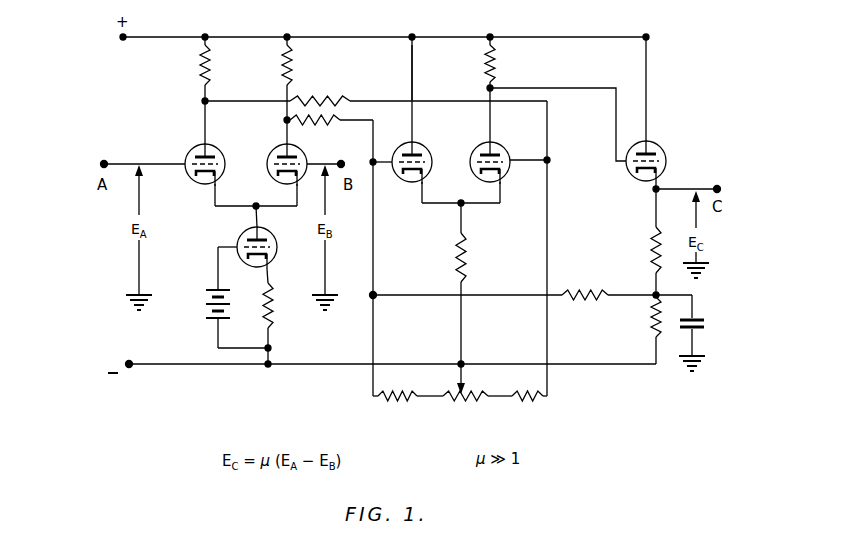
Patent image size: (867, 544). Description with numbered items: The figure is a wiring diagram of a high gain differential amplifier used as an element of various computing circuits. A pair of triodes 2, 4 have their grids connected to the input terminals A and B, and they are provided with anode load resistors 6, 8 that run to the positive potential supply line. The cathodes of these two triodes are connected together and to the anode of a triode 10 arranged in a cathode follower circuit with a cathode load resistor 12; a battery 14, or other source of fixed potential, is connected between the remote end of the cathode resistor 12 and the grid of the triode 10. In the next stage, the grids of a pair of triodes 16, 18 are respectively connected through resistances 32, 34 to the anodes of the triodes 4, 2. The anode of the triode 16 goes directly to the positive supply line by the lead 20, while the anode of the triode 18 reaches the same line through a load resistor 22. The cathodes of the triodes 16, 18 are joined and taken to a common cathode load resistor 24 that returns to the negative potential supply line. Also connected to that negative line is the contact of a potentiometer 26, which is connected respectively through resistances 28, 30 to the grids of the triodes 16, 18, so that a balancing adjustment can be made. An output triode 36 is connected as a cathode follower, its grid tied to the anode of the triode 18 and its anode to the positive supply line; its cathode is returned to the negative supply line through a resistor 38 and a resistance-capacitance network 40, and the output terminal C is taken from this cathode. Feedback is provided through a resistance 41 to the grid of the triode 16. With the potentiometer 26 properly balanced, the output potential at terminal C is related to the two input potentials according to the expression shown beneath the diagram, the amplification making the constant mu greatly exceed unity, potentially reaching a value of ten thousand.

The triode 2 is at (192, 150).
The triode 4 is at (275, 149).
The anode load resistor 6 is at (211, 70).
The anode load resistor 8 is at (291, 64).
The triode 10 is at (276, 239).
The cathode load resistor 12 is at (274, 309).
The battery 14 is at (212, 288).
The triode 16 is at (426, 152).
The triode 18 is at (503, 150).
The plate supply lead 20 is at (413, 82).
The load resistor 22 is at (496, 62).
The common cathode load resistor 24 is at (467, 264).
The potentiometer 26 is at (466, 401).
The resistance 28 is at (400, 401).
The resistance 30 is at (532, 401).
The resistance 32 is at (334, 125).
The resistance 34 is at (328, 96).
The output triode 36 is at (661, 152).
The resistor 38 is at (648, 246).
The resistance-capacitance network 40 is at (704, 316).
The resistance 41 is at (586, 288).